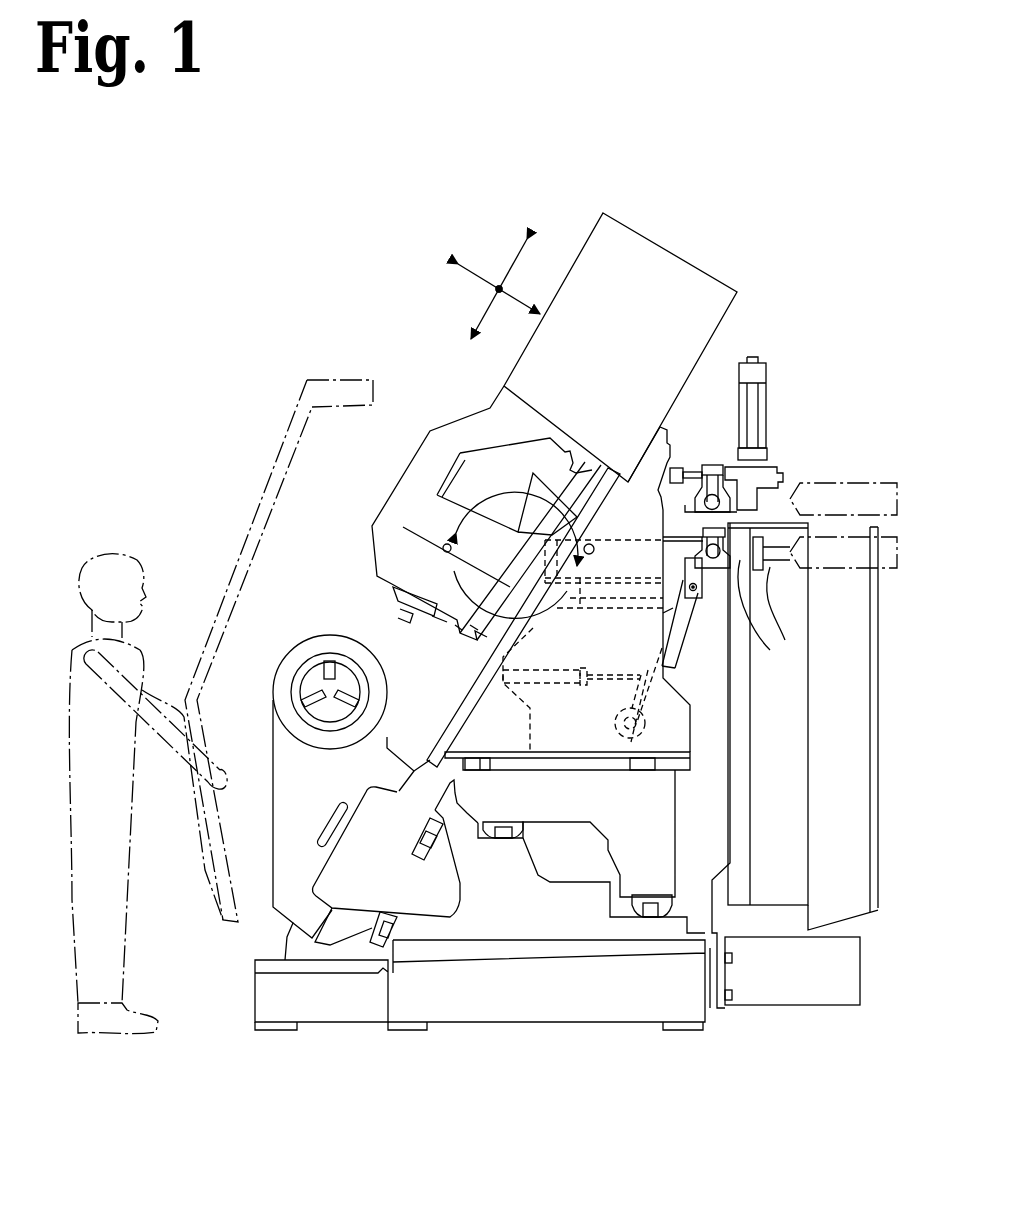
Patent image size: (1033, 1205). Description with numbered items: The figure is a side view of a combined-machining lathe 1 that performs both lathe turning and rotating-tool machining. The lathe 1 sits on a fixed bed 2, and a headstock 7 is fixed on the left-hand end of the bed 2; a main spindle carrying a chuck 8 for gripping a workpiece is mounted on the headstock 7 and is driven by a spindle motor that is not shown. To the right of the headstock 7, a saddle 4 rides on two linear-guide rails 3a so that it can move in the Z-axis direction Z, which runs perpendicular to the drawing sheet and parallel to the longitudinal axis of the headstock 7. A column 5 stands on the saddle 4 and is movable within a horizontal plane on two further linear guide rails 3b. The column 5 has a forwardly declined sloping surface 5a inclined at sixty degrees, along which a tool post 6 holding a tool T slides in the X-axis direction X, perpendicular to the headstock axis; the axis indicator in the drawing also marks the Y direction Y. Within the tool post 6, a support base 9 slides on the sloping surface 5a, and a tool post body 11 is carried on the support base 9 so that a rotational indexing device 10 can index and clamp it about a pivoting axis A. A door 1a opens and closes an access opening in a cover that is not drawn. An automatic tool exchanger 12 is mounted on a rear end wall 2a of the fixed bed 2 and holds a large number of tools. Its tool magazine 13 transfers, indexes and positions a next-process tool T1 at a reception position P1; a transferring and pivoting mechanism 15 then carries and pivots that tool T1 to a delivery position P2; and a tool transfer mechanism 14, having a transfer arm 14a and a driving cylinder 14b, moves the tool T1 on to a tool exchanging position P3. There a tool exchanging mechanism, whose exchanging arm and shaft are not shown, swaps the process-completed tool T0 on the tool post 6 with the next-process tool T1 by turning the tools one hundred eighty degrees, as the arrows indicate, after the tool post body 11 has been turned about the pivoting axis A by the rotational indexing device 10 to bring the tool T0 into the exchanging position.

The combined-machining lathe 1 is at (418, 268).
The door 1a is at (267, 466).
The fixed bed 2 is at (246, 976).
The rear end wall 2a is at (723, 980).
The linear-guide rails 3a is at (522, 838).
The linear guide rails 3b is at (478, 772).
The saddle 4 is at (682, 829).
The column 5 is at (444, 713).
The sloping surface 5a is at (443, 732).
The tool post (spindle device) 6 is at (450, 402).
The headstock 7 is at (291, 641).
The chuck 8 is at (329, 660).
The support base 9 is at (474, 628).
The rotational indexing device 10 is at (452, 625).
The tool post body (tool headstock) 11 is at (447, 616).
The automatic tool exchanger 12 is at (848, 411).
The tool magazine 13 is at (760, 712).
The tool transfer mechanism 14 is at (560, 622).
The transfer arm 14a is at (663, 613).
The driving cylinder 14b is at (641, 669).
The transferring and pivoting mechanism 15 is at (768, 423).
The pivoting axis A is at (448, 531).
The tool T is at (392, 606).
The process-completed tool T0 is at (442, 548).
The next-process tool T1 is at (716, 466).
The reception position P1 is at (785, 640).
The delivery position P2 is at (770, 650).
The tool exchanging position P3 is at (600, 548).
The X-axis direction X is at (486, 312).
The Y axis Y is at (497, 284).
The Z-axis direction Z is at (496, 321).